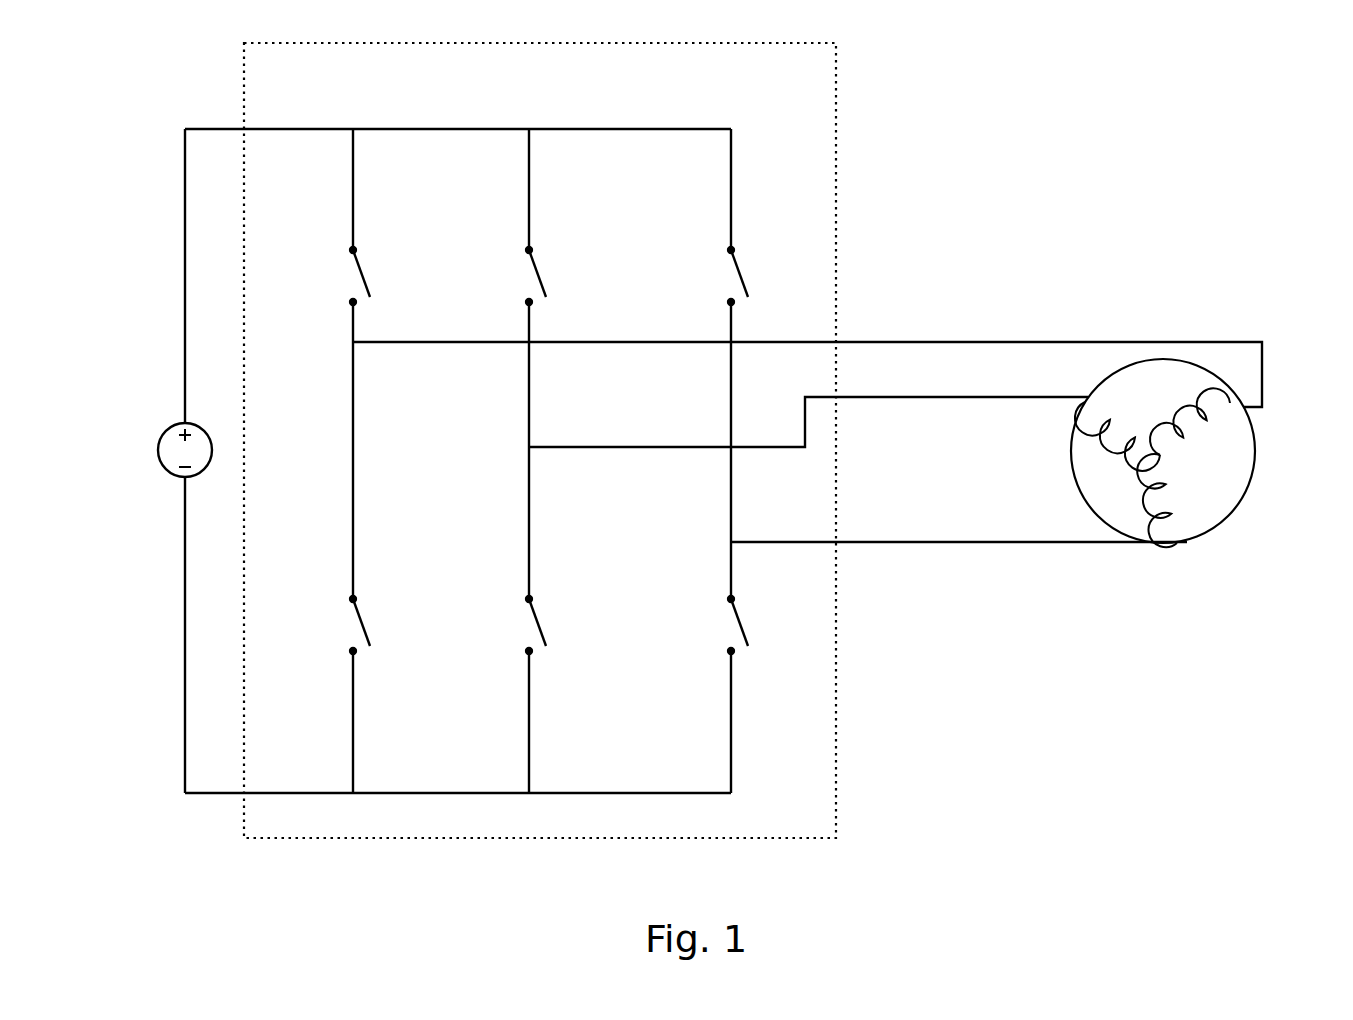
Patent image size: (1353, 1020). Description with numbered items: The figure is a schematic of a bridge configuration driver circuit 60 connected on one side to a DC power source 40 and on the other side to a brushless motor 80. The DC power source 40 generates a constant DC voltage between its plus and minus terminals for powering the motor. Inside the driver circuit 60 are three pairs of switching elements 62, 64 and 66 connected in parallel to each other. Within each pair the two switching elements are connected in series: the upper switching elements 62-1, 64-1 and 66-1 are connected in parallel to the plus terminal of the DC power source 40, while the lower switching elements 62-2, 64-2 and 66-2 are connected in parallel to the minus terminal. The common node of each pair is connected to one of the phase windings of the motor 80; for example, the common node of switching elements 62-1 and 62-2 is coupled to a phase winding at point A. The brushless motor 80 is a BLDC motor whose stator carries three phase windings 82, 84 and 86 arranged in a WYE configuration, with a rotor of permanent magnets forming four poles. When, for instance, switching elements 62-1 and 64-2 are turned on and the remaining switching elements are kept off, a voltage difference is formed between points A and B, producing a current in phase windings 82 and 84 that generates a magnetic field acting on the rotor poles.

The DC power source 40 is at (158, 450).
The bridge configuration driver circuit 60 is at (836, 150).
The pair of switching elements 62 is at (322, 432).
The switching element 62-1 is at (362, 277).
The switching element 62-2 is at (362, 625).
The pair of switching elements 64 is at (498, 430).
The switching element 64-1 is at (538, 277).
The switching element 64-2 is at (538, 625).
The pair of switching elements 66 is at (700, 431).
The switching element 66-1 is at (740, 277).
The switching element 66-2 is at (740, 625).
The brushless motor 80 is at (1181, 445).
The phase winding 82 is at (1230, 397).
The phase winding 84 is at (1153, 453).
The phase winding 86 is at (1175, 520).